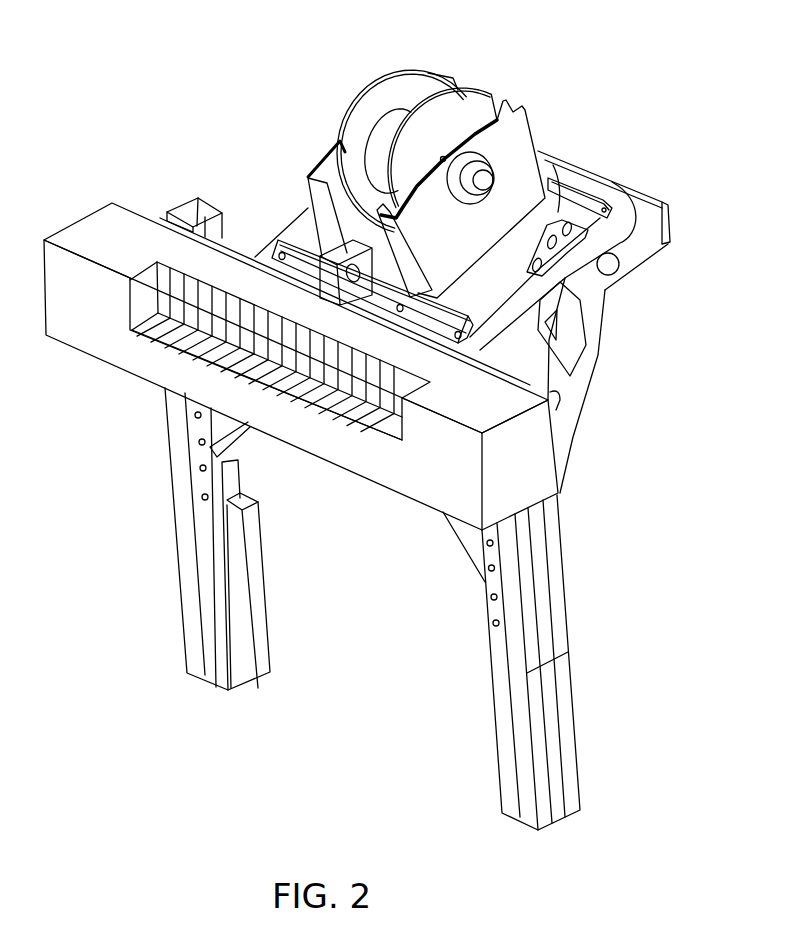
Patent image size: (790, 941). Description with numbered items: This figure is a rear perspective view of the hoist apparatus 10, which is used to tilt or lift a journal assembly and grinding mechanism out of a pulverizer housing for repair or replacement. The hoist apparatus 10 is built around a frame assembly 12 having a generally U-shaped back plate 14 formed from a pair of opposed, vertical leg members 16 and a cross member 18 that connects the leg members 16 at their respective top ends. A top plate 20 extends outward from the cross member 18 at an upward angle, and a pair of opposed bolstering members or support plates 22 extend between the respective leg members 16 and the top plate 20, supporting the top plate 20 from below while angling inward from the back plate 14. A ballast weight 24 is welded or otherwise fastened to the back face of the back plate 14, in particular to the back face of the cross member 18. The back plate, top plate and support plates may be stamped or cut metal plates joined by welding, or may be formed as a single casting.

The hoist apparatus 10 is at (550, 63).
The frame assembly 12 is at (615, 340).
The back plate 14 is at (472, 537).
The leg members 16 is at (195, 650).
The cross member 18 is at (225, 250).
The top plate 20 is at (557, 213).
The support plates 22 is at (582, 397).
The ballast weight 24 is at (88, 342).